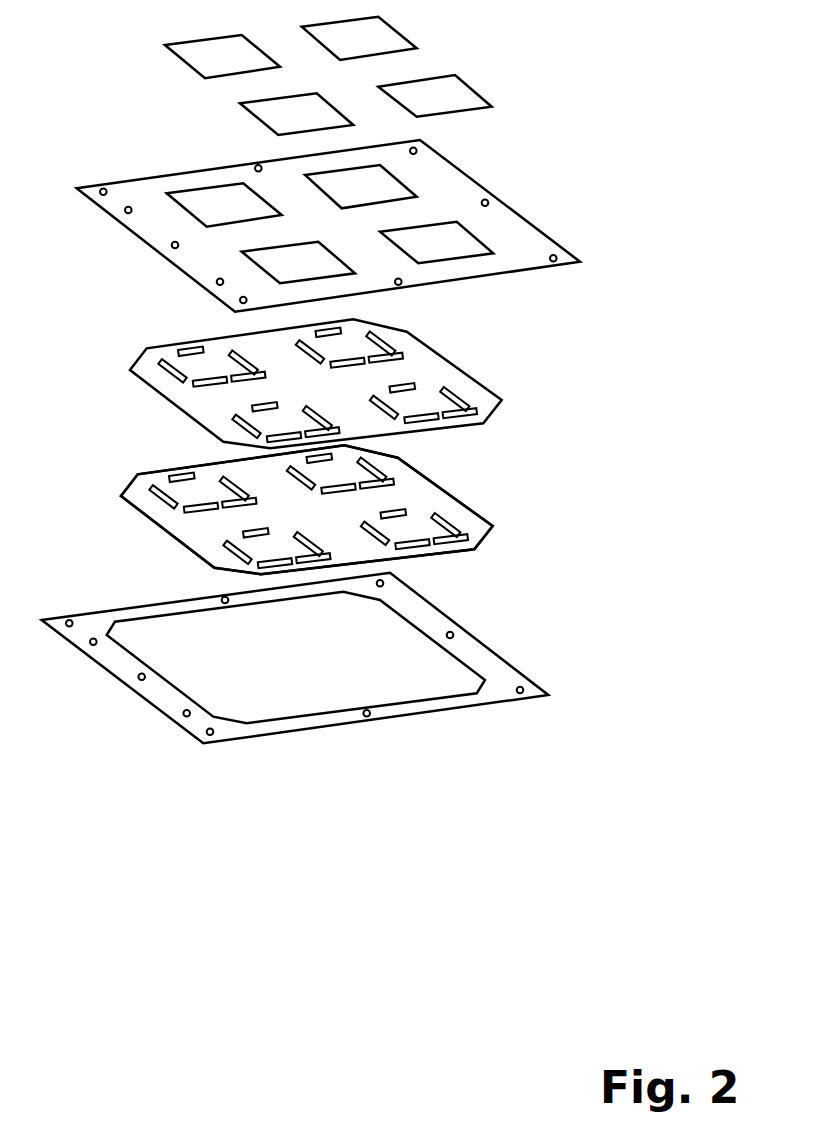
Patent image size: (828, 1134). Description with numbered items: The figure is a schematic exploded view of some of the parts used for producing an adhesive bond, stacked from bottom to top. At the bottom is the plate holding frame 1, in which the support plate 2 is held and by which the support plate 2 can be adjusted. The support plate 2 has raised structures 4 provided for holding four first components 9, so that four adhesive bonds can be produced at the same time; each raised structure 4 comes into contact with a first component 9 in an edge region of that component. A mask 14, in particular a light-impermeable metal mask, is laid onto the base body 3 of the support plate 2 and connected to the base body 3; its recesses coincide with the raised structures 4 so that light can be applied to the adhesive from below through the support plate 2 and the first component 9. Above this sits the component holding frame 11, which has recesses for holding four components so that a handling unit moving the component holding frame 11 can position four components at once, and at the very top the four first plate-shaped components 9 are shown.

The plate holding frame 1 is at (477, 658).
The support plate 2 is at (445, 488).
The base body 3 is at (202, 536).
The raised structures 4 is at (158, 494).
The first plate-shaped component 9 is at (447, 93).
The component holding frame 11 is at (498, 227).
The mask 14 is at (415, 370).